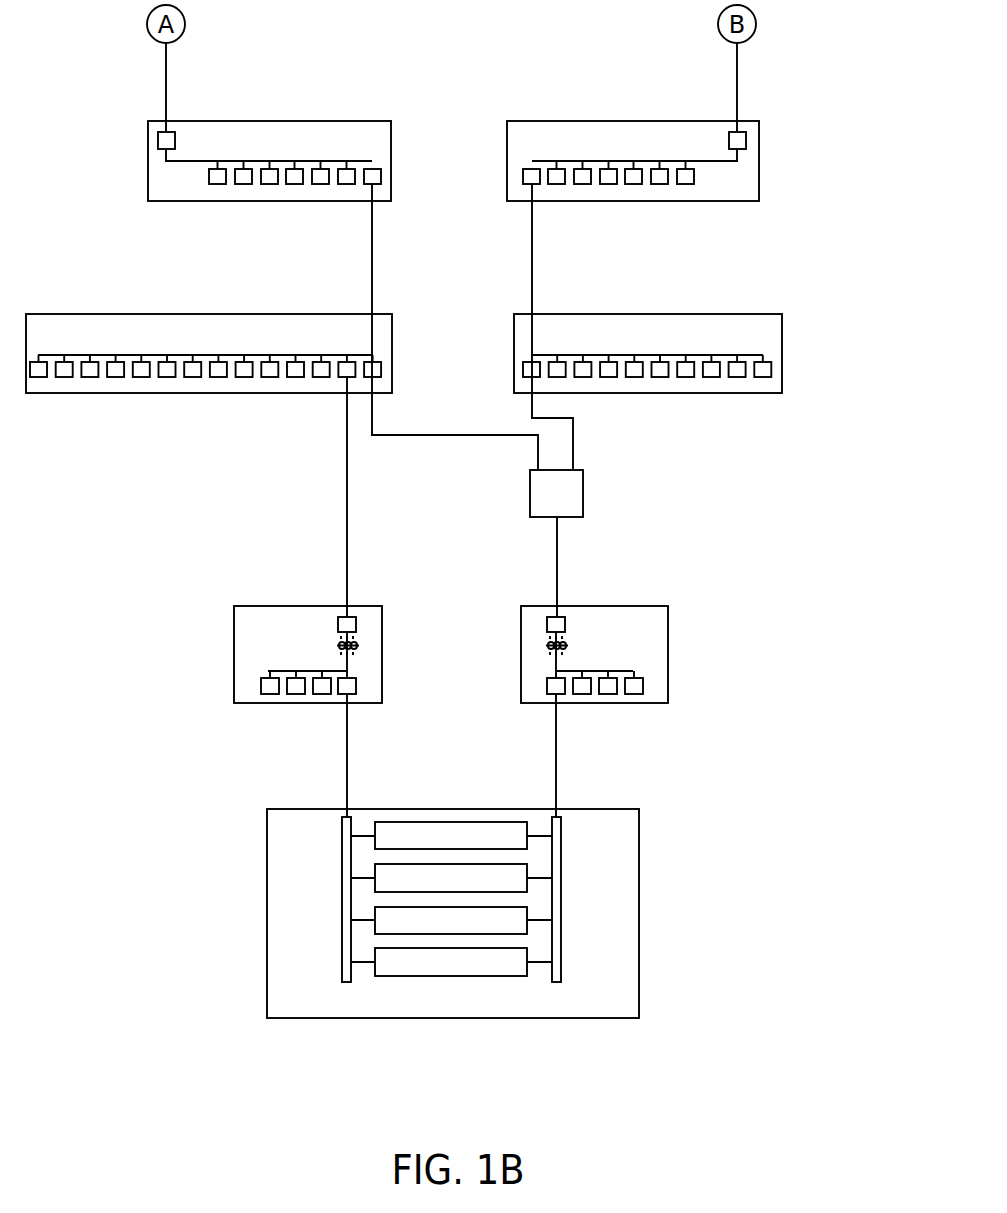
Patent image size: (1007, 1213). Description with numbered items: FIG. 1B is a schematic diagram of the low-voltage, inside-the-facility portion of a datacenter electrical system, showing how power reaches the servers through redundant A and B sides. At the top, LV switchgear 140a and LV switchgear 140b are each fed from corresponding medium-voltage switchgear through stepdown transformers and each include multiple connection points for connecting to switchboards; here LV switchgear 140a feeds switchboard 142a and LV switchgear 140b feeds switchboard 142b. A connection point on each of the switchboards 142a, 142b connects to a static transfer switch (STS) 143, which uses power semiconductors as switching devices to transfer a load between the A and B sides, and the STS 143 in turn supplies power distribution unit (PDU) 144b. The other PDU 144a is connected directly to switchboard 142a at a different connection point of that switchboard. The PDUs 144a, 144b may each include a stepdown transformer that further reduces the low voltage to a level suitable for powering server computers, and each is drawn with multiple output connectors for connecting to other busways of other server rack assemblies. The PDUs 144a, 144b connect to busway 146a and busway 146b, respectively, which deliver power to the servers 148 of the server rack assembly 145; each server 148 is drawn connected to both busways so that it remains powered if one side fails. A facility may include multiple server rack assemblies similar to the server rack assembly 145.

The LV switchgear 140a is at (148, 160).
The LV switchgear 140b is at (759, 161).
The switchboard 142a is at (38, 314).
The switchboard 142b is at (782, 352).
The static transfer switch (STS) 143 is at (530, 493).
The power distribution unit (PDU) 144a is at (234, 652).
The power distribution unit (PDU) 144b is at (668, 652).
The server rack assembly 145 is at (454, 922).
The busway 146a is at (342, 898).
The busway 146b is at (561, 898).
The server 148 is at (445, 984).